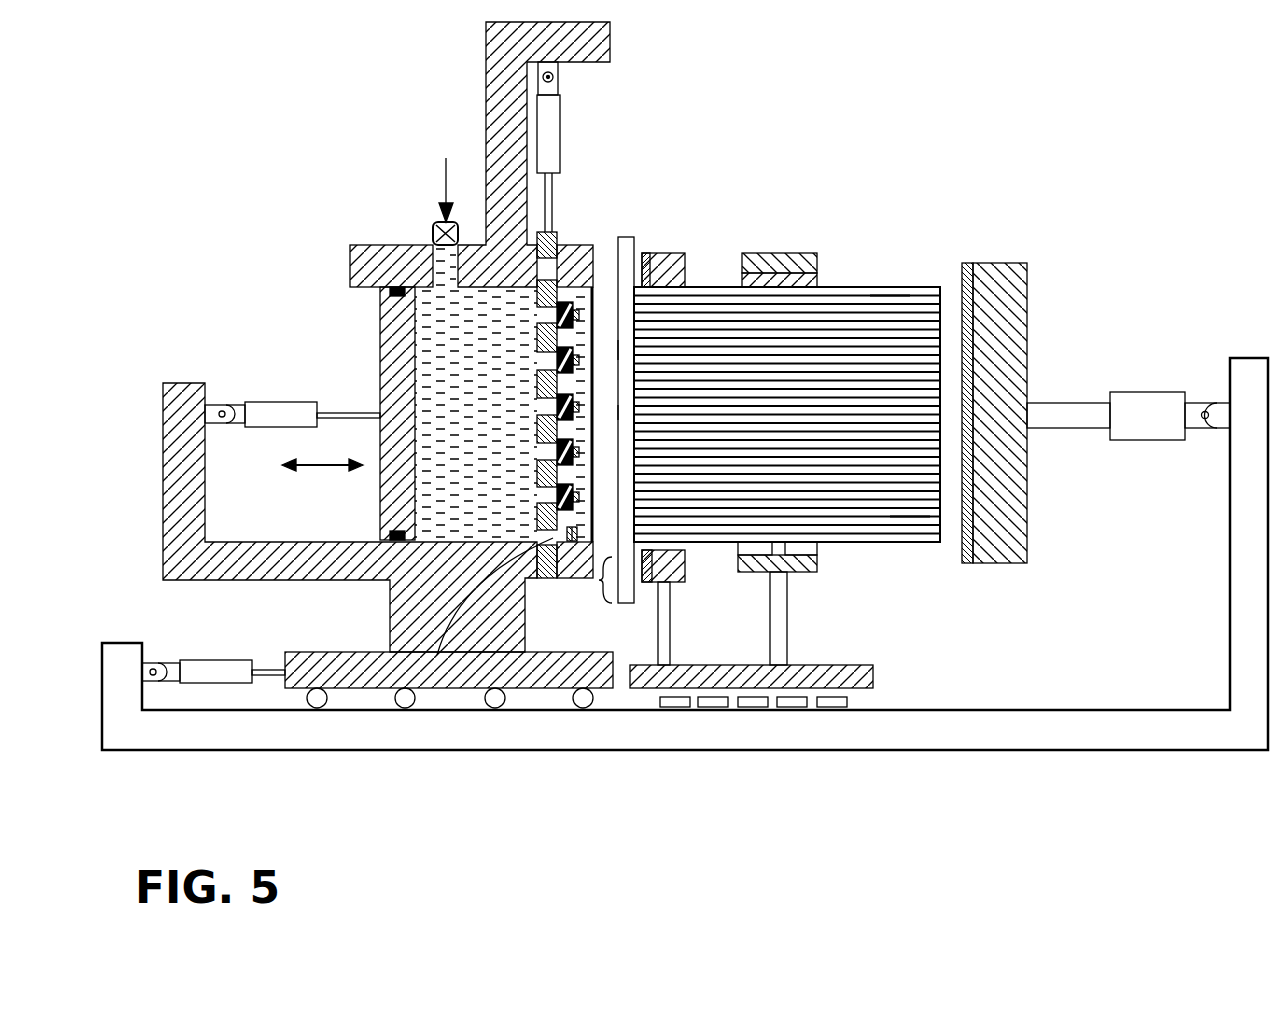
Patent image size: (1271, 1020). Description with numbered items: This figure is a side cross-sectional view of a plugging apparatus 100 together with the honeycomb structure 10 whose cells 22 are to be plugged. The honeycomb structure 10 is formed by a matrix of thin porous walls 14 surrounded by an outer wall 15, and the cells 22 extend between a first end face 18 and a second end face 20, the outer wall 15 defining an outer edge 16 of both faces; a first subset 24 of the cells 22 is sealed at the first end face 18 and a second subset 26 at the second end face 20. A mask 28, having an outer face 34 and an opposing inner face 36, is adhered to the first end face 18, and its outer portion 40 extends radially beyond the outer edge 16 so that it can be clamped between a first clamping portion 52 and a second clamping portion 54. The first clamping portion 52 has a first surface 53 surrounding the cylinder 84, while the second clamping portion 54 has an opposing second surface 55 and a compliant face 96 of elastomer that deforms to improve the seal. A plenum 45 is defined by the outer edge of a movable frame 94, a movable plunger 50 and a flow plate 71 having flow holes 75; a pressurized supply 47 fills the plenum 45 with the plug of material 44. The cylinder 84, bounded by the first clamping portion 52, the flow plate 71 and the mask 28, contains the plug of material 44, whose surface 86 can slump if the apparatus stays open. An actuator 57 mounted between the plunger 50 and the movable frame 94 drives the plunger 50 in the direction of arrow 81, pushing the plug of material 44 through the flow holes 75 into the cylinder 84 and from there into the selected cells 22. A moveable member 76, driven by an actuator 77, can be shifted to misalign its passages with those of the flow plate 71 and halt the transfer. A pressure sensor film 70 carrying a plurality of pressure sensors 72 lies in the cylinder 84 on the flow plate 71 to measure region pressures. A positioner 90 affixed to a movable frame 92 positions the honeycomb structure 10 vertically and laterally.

The plugging apparatus 100 is at (1017, 158).
The honeycomb structure 10 is at (836, 310).
The walls 14 is at (890, 295).
The outer wall 15 is at (875, 288).
The outer edge 16 is at (888, 543).
The first end face 18 is at (618, 410).
The second end face 20 is at (940, 310).
The cells 22 is at (853, 503).
The first subset of cells 24 is at (673, 523).
The second subset of cells 26 is at (903, 512).
The mask 28 is at (659, 364).
The outer face 34 is at (618, 308).
The inner face 36 is at (645, 387).
The outer portion 40 is at (603, 583).
The plug of material 44 is at (467, 441).
The plenum 45 is at (367, 413).
The pressurized supply 47 is at (446, 172).
The movable plunger 50 is at (380, 360).
The first clamping portion 52 is at (563, 580).
The first surface 53 is at (597, 262).
The second clamping portion 54 is at (675, 254).
The second surface 55 is at (645, 582).
The actuator 57 is at (278, 407).
The pressure sensor film 70 is at (407, 288).
The flow plate 71 is at (553, 407).
The pressure sensors 72 is at (553, 347).
The flow holes 75 is at (550, 495).
The moveable member 76 is at (543, 472).
The actuator 77 is at (555, 110).
The arrow 81 is at (325, 468).
The cylinder 84 is at (580, 465).
The surface 86 is at (617, 353).
The positioner 90 is at (802, 570).
The movable frame 92 is at (868, 678).
The movable frame 94 is at (458, 645).
The compliant face 96 is at (645, 257).